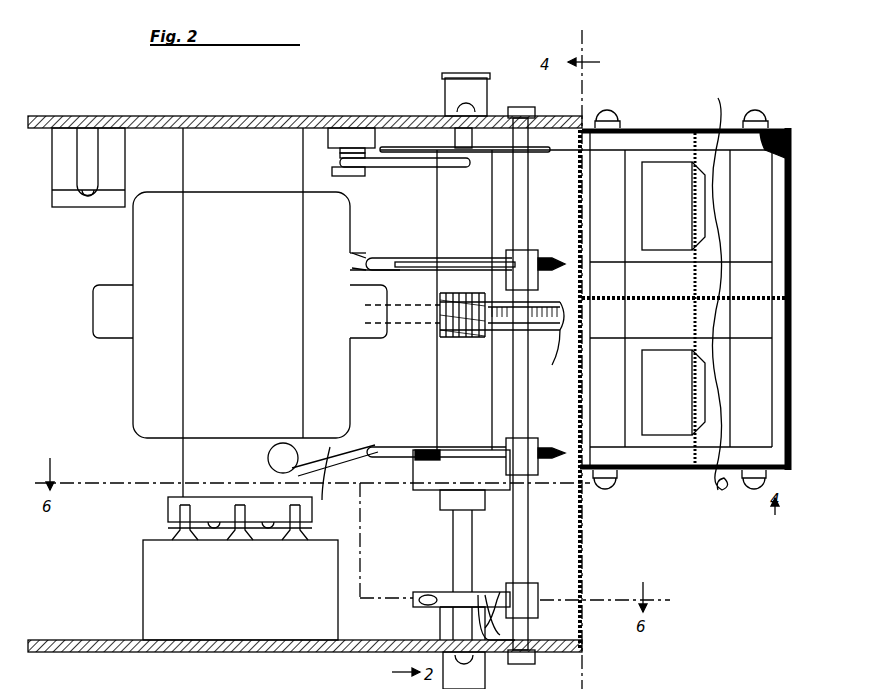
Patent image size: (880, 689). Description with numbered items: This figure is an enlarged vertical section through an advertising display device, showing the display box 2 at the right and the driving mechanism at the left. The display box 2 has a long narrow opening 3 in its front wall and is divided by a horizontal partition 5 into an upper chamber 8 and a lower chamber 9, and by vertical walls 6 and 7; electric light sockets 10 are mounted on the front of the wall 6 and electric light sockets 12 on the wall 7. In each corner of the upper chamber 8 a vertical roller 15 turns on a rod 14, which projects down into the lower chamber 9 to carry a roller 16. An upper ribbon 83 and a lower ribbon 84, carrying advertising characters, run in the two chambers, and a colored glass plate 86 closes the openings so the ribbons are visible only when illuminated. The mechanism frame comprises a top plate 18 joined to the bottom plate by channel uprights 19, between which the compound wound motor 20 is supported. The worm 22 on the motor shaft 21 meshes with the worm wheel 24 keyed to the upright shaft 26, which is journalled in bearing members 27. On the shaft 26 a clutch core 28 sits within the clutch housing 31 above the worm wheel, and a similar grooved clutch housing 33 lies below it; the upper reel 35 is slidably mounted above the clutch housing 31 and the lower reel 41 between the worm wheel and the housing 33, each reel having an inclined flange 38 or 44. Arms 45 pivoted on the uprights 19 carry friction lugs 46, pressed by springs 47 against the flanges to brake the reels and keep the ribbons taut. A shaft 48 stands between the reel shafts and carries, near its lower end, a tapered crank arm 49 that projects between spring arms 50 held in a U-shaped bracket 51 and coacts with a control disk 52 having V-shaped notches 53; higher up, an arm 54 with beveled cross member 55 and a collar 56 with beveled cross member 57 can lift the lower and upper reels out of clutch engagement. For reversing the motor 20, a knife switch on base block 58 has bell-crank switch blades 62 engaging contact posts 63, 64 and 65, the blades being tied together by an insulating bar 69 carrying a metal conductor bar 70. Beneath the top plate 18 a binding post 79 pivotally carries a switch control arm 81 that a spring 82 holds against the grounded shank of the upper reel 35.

The display box 2 is at (645, 128).
The opening 3 is at (795, 135).
The horizontal partition 5 is at (662, 298).
The vertical wall 6 is at (692, 156).
The vertical wall 7 is at (692, 345).
The upper chamber 8 is at (712, 130).
The lower chamber 9 is at (718, 301).
The electric light socket 10 is at (673, 206).
The electric light socket 12 is at (673, 392).
The rod 14 is at (612, 108).
The vertical roller 15 is at (604, 223).
The roller 16 is at (678, 312).
The top plate 18 is at (150, 116).
The channel upright 19 is at (486, 312).
The compound wound motor 20 is at (246, 315).
The motor shaft 21 is at (415, 318).
The worm 22 is at (458, 292).
The worm wheel 24 is at (554, 356).
The upright shaft 26 is at (462, 546).
The bearing member 27 is at (462, 82).
The clutch core 28 is at (450, 497).
The clutch housing 31 is at (521, 303).
The clutch housing 33 is at (461, 470).
The upper reel 35 is at (461, 207).
The inclined flange 38 is at (405, 268).
The lower reel 41 is at (469, 391).
The inclined flange 44 is at (335, 463).
The arm 45 is at (356, 252).
The friction lug 46 is at (372, 262).
The spring 47 is at (306, 448).
The shaft 48 is at (530, 548).
The crank arm 49 is at (500, 590).
The spring arm 50 is at (496, 616).
The U-shaped bracket 51 is at (455, 620).
The control disk 52 is at (428, 593).
The V-shaped notch 53 is at (418, 604).
The arm 54 is at (482, 456).
The cross member 55 is at (415, 462).
The collar 56 is at (522, 262).
The beveled cross member 57 is at (548, 262).
The base block 58 is at (240, 590).
The switch blade 62 is at (295, 503).
The contact post 63 is at (288, 540).
The contact post 64 is at (232, 540).
The contact post 65 is at (178, 540).
The insulating bar 69 is at (168, 505).
The metal conductor bar 70 is at (180, 528).
The binding post 79 is at (332, 170).
The switch control arm 81 is at (398, 166).
The spring 82 is at (340, 155).
The upper ribbon 83 is at (772, 188).
The lower ribbon 84 is at (772, 374).
The glass plate 86 is at (782, 241).